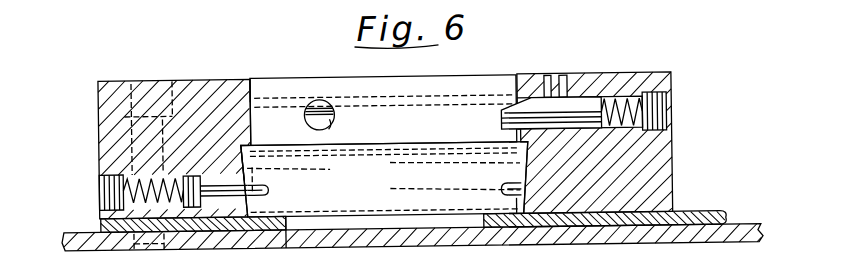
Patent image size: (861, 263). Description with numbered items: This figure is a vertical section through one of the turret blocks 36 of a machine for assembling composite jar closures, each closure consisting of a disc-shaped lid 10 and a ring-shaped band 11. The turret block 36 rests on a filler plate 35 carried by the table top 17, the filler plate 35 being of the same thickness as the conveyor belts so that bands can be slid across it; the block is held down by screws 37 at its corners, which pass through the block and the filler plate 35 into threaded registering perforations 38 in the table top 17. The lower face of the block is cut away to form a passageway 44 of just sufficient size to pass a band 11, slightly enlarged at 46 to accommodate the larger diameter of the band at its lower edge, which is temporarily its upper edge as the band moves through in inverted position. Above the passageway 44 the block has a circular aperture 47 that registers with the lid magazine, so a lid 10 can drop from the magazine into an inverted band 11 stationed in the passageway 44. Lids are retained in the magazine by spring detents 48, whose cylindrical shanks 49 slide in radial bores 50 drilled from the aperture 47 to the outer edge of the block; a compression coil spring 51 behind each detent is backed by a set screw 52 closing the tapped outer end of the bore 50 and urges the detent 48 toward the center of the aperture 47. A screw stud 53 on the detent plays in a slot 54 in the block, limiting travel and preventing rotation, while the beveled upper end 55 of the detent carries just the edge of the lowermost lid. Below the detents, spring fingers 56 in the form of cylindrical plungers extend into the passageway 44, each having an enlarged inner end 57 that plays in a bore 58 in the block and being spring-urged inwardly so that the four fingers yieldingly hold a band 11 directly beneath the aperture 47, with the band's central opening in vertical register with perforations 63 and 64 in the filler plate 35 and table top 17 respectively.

The disc-shaped lid 10 is at (441, 94).
The ring-shaped band 11 is at (463, 150).
The table top 17 is at (752, 228).
The filler plate 35 is at (704, 214).
The turret block 36 is at (106, 100).
The screws 37 is at (131, 77).
The threaded registering perforations 38 is at (86, 227).
The passageway 44 is at (516, 199).
The enlargement 46 is at (241, 160).
The circular aperture 47 is at (252, 90).
The spring detent 48 is at (336, 119).
The cylindrical shank 49 is at (538, 104).
The bore 50 is at (668, 102).
The compression coil spring 51 is at (620, 98).
The set screw 52 is at (668, 121).
The screw stud 53 is at (548, 76).
The slot 54 is at (565, 77).
The beveled end 55 is at (320, 106).
The spring finger 56 is at (269, 188).
The enlarged inner end 57 is at (191, 173).
The bore 58 is at (121, 178).
The perforation 63 is at (287, 231).
The perforation 64 is at (287, 246).